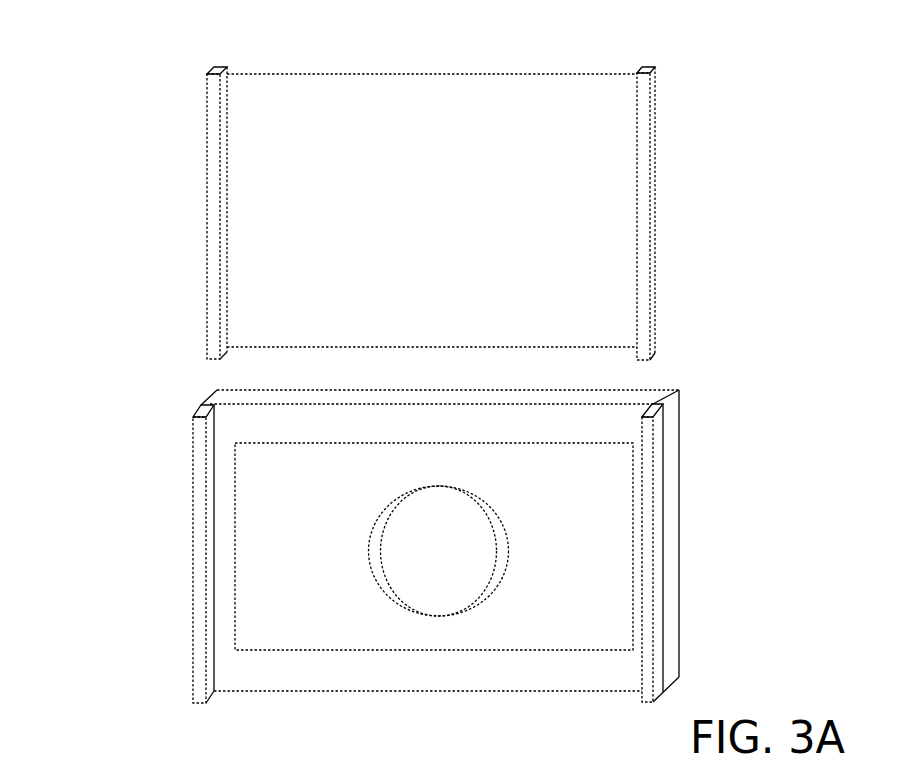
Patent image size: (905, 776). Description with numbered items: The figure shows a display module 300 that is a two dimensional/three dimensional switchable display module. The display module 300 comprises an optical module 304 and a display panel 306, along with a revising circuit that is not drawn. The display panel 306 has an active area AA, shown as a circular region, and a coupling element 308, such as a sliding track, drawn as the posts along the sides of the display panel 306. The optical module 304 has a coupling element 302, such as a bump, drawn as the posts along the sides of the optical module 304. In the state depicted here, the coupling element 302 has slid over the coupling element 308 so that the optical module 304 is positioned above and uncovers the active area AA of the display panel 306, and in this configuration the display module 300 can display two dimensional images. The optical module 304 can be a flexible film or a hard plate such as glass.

The display module 300 is at (92, 40).
The coupling element 302 is at (645, 212).
The optical module 304 is at (474, 184).
The display panel 306 is at (440, 565).
The coupling element 308 is at (658, 452).
The active area AA is at (503, 627).